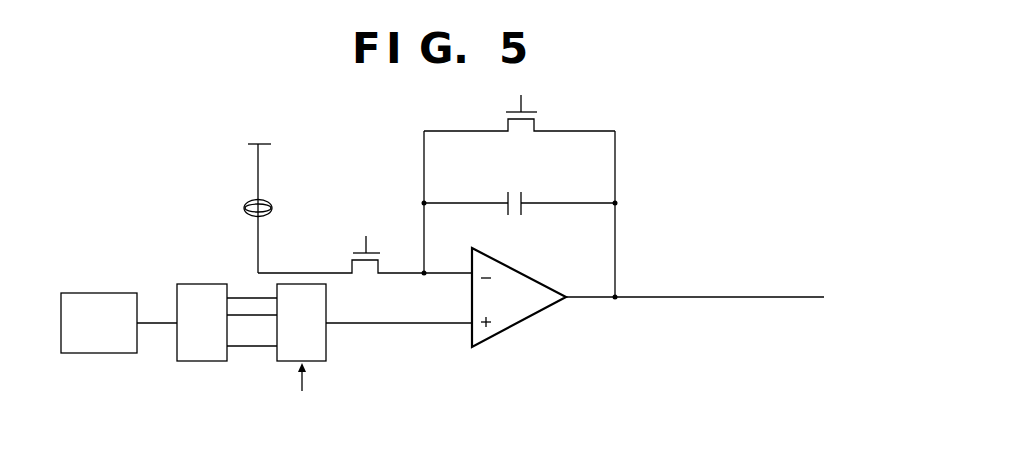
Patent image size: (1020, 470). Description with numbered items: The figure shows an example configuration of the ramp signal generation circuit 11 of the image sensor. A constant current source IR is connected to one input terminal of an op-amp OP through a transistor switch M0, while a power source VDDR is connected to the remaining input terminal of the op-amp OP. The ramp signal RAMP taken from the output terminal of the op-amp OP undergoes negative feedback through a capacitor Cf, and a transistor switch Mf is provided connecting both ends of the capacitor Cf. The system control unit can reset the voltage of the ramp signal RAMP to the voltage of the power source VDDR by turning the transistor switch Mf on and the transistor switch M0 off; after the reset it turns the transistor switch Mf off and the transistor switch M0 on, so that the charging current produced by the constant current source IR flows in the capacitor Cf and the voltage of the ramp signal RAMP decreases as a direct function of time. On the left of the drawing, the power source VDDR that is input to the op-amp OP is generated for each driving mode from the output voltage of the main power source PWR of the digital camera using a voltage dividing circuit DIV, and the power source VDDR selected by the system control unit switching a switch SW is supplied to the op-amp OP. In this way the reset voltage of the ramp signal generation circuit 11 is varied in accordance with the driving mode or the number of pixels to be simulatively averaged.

The ramp signal generation circuit 11 is at (710, 68).
The main power source PWR is at (99, 323).
The voltage dividing circuit DIV is at (202, 322).
The switch SW is at (301, 337).
The power source VDDR is at (399, 338).
The constant current source IR is at (243, 208).
The transistor switch M0 is at (365, 269).
The transistor switch Mf is at (519, 126).
The capacitor Cf is at (519, 190).
The op-amp OP is at (528, 275).
The ramp signal RAMP is at (695, 285).